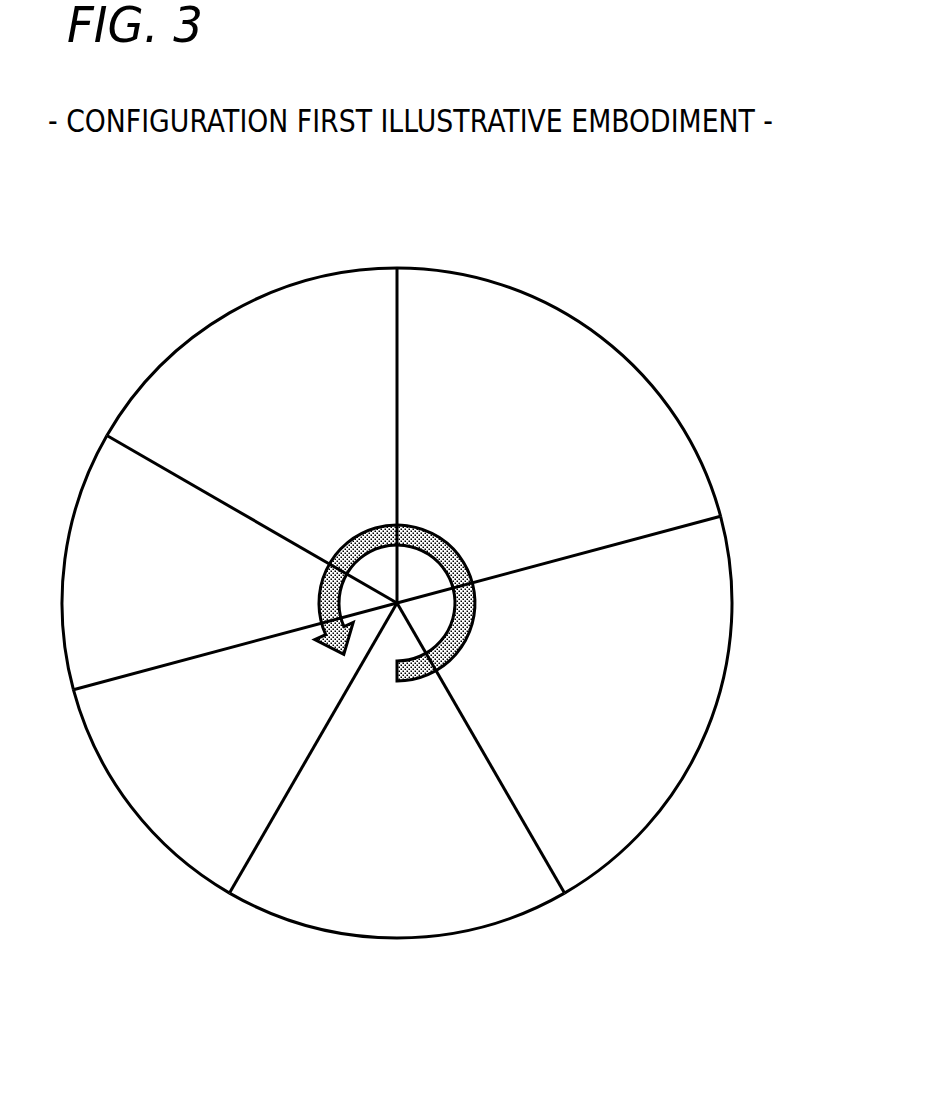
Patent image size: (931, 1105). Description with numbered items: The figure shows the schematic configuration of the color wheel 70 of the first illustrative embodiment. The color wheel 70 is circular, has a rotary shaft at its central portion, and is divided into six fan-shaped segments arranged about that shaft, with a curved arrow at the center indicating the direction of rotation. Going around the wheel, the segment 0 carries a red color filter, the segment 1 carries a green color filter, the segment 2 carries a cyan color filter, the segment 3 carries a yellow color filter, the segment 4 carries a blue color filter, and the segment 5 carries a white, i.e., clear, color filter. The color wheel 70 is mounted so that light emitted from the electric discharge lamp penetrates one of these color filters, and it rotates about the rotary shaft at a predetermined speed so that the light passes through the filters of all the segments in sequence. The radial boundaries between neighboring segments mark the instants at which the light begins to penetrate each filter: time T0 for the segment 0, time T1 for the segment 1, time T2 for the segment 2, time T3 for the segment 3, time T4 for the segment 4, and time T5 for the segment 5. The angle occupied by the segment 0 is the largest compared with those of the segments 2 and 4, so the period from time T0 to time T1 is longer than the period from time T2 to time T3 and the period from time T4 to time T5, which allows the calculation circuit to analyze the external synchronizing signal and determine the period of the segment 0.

The color wheel 70 is at (67, 198).
The time T0 is at (397, 401).
The time T1 is at (605, 541).
The time T2 is at (509, 775).
The time T3 is at (306, 775).
The time T4 is at (206, 661).
The time T5 is at (230, 496).
The segment 0 is at (559, 392).
The segment 1 is at (620, 704).
The segment 2 is at (397, 862).
The segment 3 is at (177, 787).
The segment 4 is at (162, 563).
The segment 5 is at (252, 355).